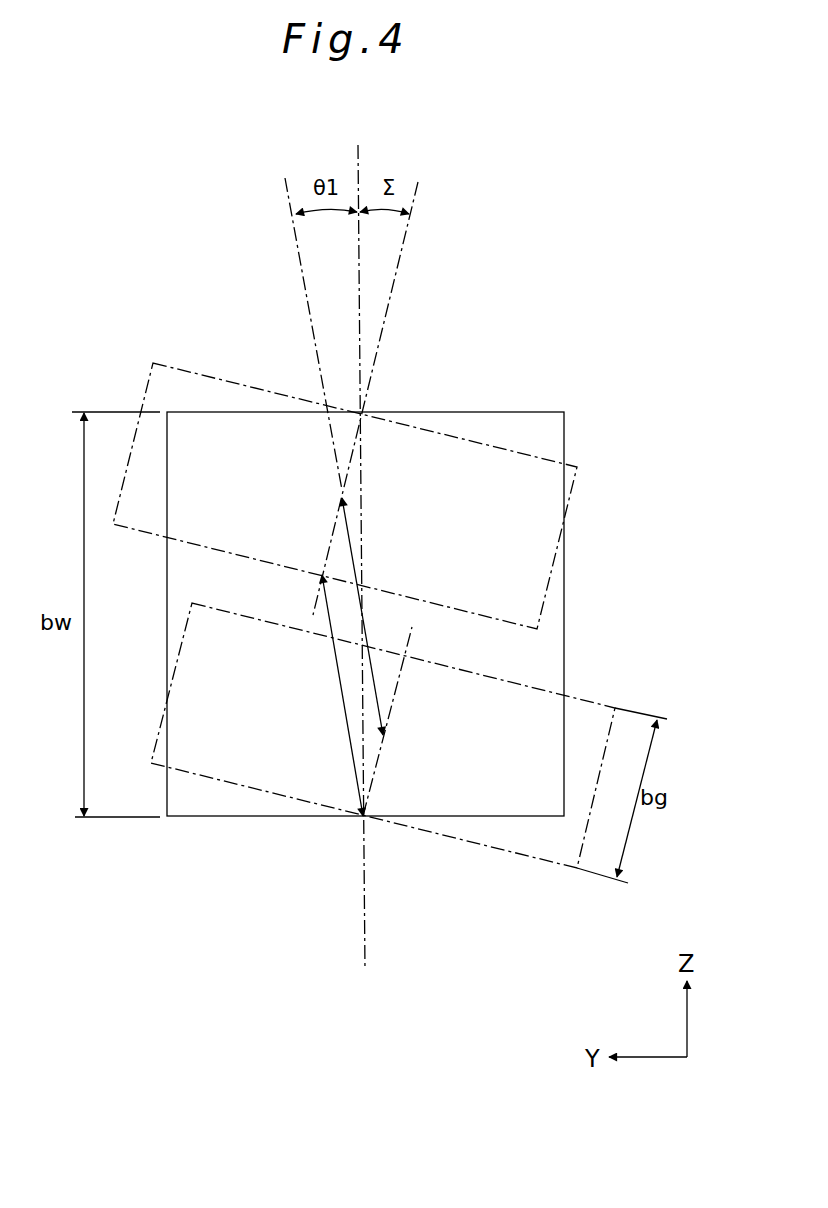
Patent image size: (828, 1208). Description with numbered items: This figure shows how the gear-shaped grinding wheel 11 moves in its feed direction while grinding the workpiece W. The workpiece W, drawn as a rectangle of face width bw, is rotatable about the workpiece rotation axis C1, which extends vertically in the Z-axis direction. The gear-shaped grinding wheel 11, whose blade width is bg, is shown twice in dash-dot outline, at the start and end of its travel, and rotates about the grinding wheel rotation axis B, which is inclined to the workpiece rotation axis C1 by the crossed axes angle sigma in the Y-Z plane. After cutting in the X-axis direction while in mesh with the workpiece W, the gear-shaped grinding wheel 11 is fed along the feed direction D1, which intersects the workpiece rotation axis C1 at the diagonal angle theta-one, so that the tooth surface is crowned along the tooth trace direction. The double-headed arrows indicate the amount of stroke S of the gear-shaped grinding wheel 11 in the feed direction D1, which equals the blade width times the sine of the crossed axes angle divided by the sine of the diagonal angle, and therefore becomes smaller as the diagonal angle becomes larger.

The gear-shaped grinding wheel 11 is at (572, 493).
The workpiece W is at (564, 638).
The workpiece rotation axis C1 is at (357, 549).
The feed direction D1 is at (306, 320).
The grinding wheel rotation axis B is at (370, 486).
The amount of stroke S is at (352, 657).